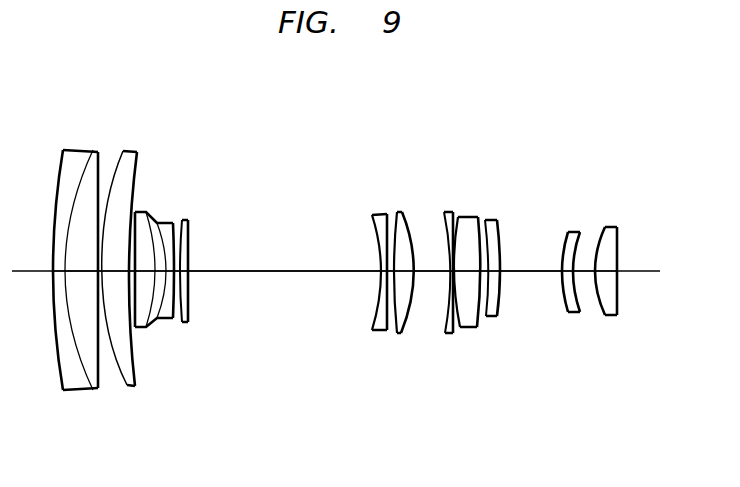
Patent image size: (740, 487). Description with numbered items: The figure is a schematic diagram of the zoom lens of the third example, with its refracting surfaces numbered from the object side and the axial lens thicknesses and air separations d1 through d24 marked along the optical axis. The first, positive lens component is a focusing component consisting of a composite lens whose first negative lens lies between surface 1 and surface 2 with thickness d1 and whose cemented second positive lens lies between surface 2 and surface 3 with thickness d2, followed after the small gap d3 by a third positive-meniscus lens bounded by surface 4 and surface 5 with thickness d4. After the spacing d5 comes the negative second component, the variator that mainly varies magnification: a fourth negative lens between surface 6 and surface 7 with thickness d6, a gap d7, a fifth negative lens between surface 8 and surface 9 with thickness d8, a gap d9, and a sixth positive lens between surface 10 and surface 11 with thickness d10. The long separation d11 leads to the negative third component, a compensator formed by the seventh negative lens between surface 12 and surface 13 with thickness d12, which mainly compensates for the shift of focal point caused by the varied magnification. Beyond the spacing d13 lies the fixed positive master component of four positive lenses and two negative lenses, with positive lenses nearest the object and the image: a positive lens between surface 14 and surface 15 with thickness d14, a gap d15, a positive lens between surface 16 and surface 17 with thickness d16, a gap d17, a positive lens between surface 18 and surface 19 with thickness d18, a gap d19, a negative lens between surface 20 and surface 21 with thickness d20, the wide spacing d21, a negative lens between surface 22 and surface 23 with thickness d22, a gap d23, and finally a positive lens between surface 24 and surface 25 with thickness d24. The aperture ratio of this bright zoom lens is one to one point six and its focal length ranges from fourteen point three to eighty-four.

The first surface radius of curvature 1 is at (63, 149).
The second surface radius of curvature 2 is at (90, 149).
The third surface radius of curvature 3 is at (99, 151).
The fourth surface radius of curvature 4 is at (130, 150).
The fifth surface radius of curvature 5 is at (138, 151).
The sixth surface radius of curvature 6 is at (137, 212).
The seventh surface radius of curvature 7 is at (147, 212).
The eighth surface radius of curvature 8 is at (158, 222).
The ninth surface radius of curvature 9 is at (173, 222).
The tenth surface radius of curvature 10 is at (184, 220).
The eleventh surface radius of curvature 11 is at (189, 220).
The twelfth surface radius of curvature 12 is at (372, 214).
The thirteenth surface radius of curvature 13 is at (387, 213).
The fourteenth surface radius of curvature 14 is at (397, 212).
The fifteenth surface radius of curvature 15 is at (404, 212).
The sixteenth surface radius of curvature 16 is at (445, 212).
The seventeenth surface radius of curvature 17 is at (453, 212).
The eighteenth surface radius of curvature 18 is at (460, 215).
The nineteenth surface radius of curvature 19 is at (478, 216).
The twentieth surface radius of curvature 20 is at (486, 221).
The twenty-first surface radius of curvature 21 is at (497, 221).
The twenty-second surface radius of curvature 22 is at (568, 232).
The twenty-third surface radius of curvature 23 is at (581, 232).
The twenty-fourth surface radius of curvature 24 is at (605, 227).
The twenty-fifth surface radius of curvature 25 is at (617, 227).
The first negative lens thickness d1 is at (59, 272).
The second positive lens thickness d2 is at (81, 272).
The first air separation d3 is at (100, 272).
The third positive-meniscus lens thickness d4 is at (116, 272).
The second air separation d5 is at (132, 272).
The fourth negative lens thickness d6 is at (145, 272).
The third air separation d7 is at (160, 272).
The fifth negative lens thickness d8 is at (170, 272).
The fourth air separation d9 is at (177, 272).
The sixth positive lens thickness d10 is at (184, 272).
The variator-to-compensator separation d11 is at (280, 272).
The seventh negative lens thickness d12 is at (384, 272).
The compensator-to-master separation d13 is at (390, 272).
The first master positive lens thickness d14 is at (404, 272).
The fifth air separation d15 is at (432, 272).
The second master positive lens thickness d16 is at (451, 272).
The sixth air separation d17 is at (454, 272).
The third master positive lens thickness d18 is at (467, 272).
The seventh air separation d19 is at (484, 272).
The first master negative lens thickness d20 is at (494, 272).
The eighth air separation d21 is at (531, 272).
The second master negative lens thickness d22 is at (568, 272).
The ninth air separation d23 is at (584, 272).
The final positive lens thickness d24 is at (606, 272).